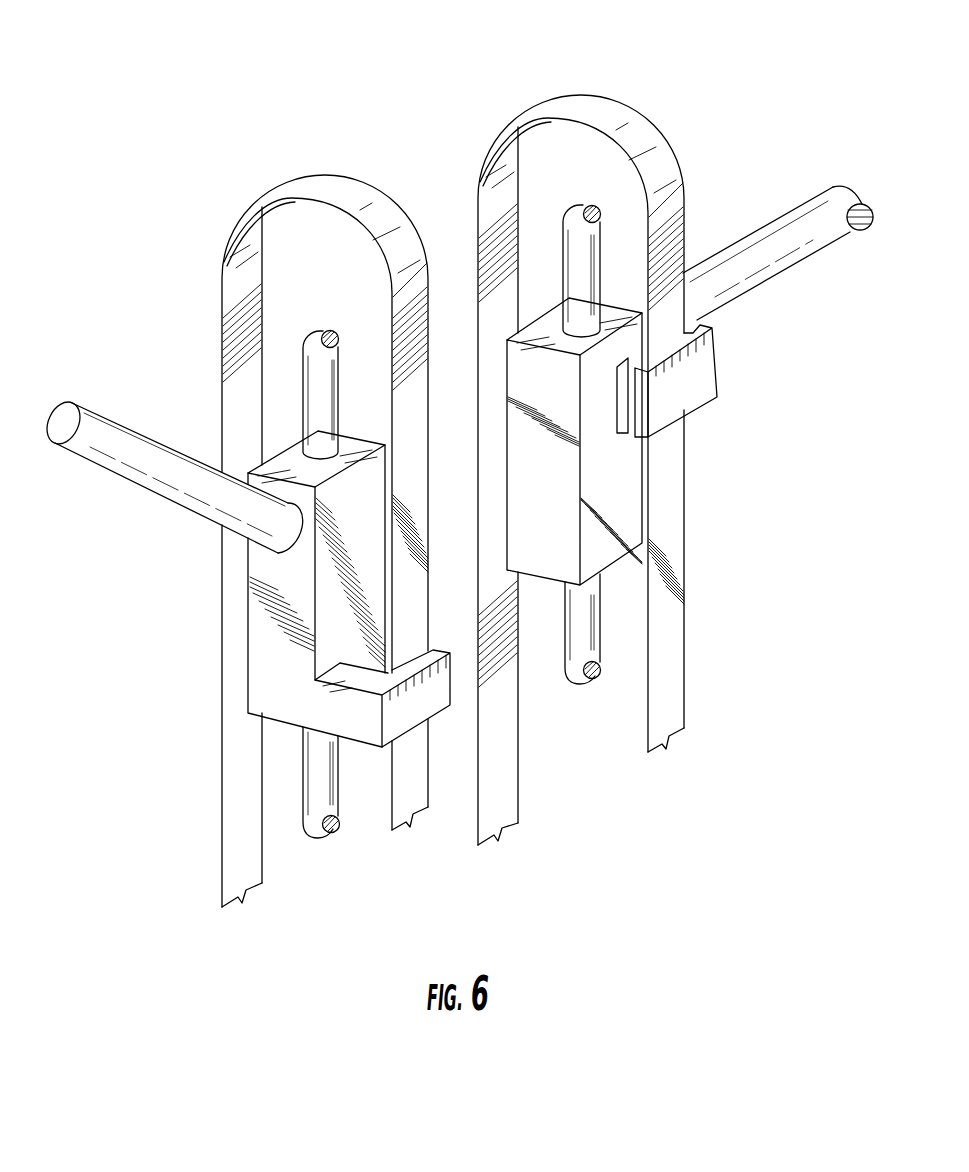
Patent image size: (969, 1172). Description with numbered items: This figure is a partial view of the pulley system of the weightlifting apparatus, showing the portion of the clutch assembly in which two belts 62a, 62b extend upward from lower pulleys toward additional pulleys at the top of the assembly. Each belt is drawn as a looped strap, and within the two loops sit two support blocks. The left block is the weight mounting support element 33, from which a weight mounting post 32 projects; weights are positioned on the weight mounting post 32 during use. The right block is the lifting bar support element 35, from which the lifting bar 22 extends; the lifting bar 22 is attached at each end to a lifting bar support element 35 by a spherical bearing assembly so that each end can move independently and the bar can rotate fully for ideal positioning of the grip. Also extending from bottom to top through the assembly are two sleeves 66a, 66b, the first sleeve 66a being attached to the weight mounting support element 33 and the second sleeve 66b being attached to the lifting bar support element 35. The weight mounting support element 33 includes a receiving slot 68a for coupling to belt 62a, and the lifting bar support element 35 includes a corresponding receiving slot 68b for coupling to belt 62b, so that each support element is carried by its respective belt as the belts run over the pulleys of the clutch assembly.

The lifting bar 22 is at (752, 240).
The weight mounting post 32 is at (107, 427).
The weight mounting support element 33 is at (265, 653).
The lifting bar support element 35 is at (620, 482).
The belt 62a is at (227, 237).
The belt 62b is at (620, 97).
The sleeve 66a is at (310, 392).
The sleeve 66b is at (590, 243).
The receiving slot 68a is at (437, 690).
The receiving slot 68b is at (695, 367).